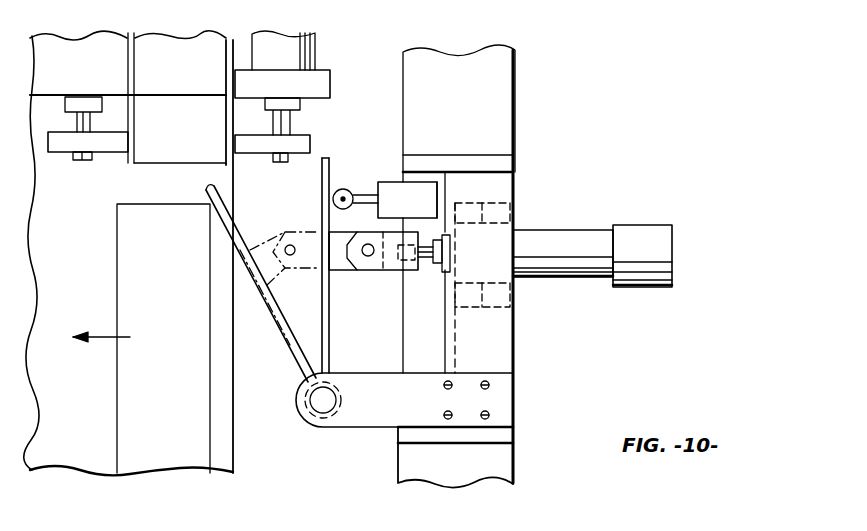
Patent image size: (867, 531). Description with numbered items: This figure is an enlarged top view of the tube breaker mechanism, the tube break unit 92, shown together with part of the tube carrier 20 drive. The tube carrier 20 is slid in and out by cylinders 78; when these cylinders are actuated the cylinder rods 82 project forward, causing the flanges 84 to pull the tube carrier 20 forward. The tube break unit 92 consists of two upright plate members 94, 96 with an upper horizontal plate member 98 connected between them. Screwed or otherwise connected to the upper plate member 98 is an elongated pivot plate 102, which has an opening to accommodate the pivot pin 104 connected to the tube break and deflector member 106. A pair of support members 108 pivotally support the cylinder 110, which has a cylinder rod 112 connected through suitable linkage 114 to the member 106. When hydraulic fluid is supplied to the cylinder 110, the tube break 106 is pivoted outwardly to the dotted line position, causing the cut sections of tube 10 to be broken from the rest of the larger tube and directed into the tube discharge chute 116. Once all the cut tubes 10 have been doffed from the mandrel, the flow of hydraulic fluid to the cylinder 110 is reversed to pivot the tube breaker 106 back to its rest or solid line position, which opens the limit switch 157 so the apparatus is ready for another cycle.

The tube 10 is at (130, 428).
The tube carrier 20 is at (134, 126).
The cylinders 78 is at (316, 43).
The cylinder rods 82 is at (291, 128).
The flanges 84 is at (311, 146).
The tube break unit 92 is at (270, 350).
The upright plate member 94 is at (502, 437).
The upright plate member 96 is at (503, 165).
The upper horizontal plate member 98 is at (502, 337).
The elongated pivot plate 102 is at (505, 405).
The pivot pin 104 is at (330, 400).
The tube break and deflector member 106 is at (329, 340).
The support members 108 is at (512, 213).
The cylinder 110 is at (590, 240).
The cylinder rod 112 is at (428, 266).
The linkage 114 is at (370, 270).
The discharge chute 116 is at (73, 458).
The limit switch 157 is at (413, 188).